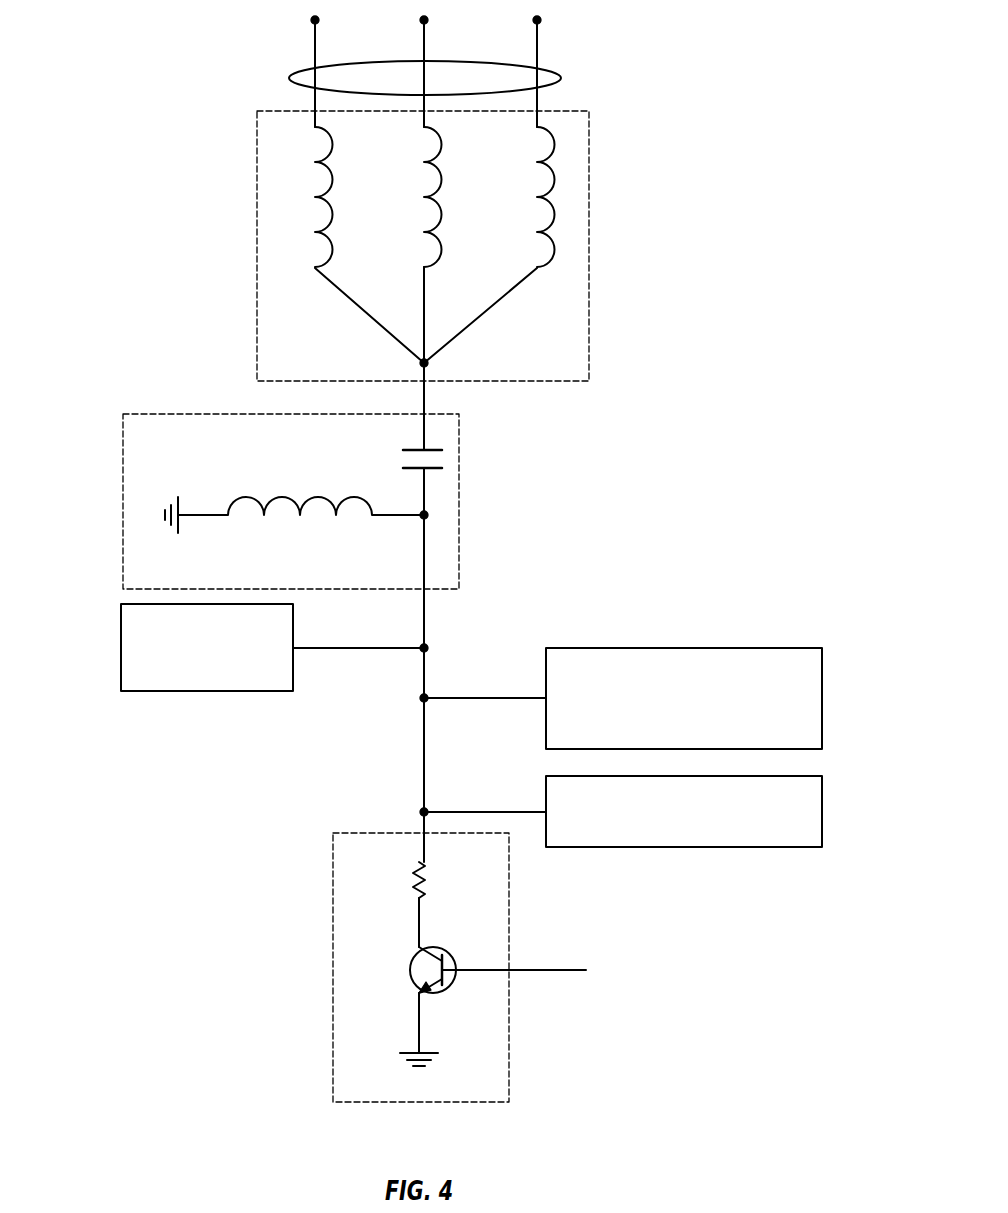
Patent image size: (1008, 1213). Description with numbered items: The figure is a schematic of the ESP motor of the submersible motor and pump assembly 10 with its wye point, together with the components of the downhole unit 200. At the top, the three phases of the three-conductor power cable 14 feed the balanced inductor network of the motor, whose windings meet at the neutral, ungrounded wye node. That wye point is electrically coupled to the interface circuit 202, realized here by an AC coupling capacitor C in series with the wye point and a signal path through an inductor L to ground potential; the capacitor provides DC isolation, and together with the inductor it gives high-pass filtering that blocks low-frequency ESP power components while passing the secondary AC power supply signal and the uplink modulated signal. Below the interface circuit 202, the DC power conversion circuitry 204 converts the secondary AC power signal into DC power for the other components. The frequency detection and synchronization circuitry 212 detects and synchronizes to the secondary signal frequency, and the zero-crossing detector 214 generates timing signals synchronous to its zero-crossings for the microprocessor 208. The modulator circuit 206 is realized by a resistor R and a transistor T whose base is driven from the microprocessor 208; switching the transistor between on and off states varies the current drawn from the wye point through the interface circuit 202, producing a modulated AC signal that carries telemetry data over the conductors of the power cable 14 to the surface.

The three-conductor power cable 14 is at (553, 70).
The submersible motor and pump assembly 10 is at (591, 138).
The downhole unit 200 is at (584, 536).
The interface circuit 202 is at (462, 462).
The DC power conversion circuitry 204 is at (121, 620).
The frequency detection and synchronization circuitry 212 is at (798, 648).
The zero-crossing detector 214 is at (795, 847).
The modulator circuit 206 is at (333, 870).
The microprocessor 208 is at (644, 983).